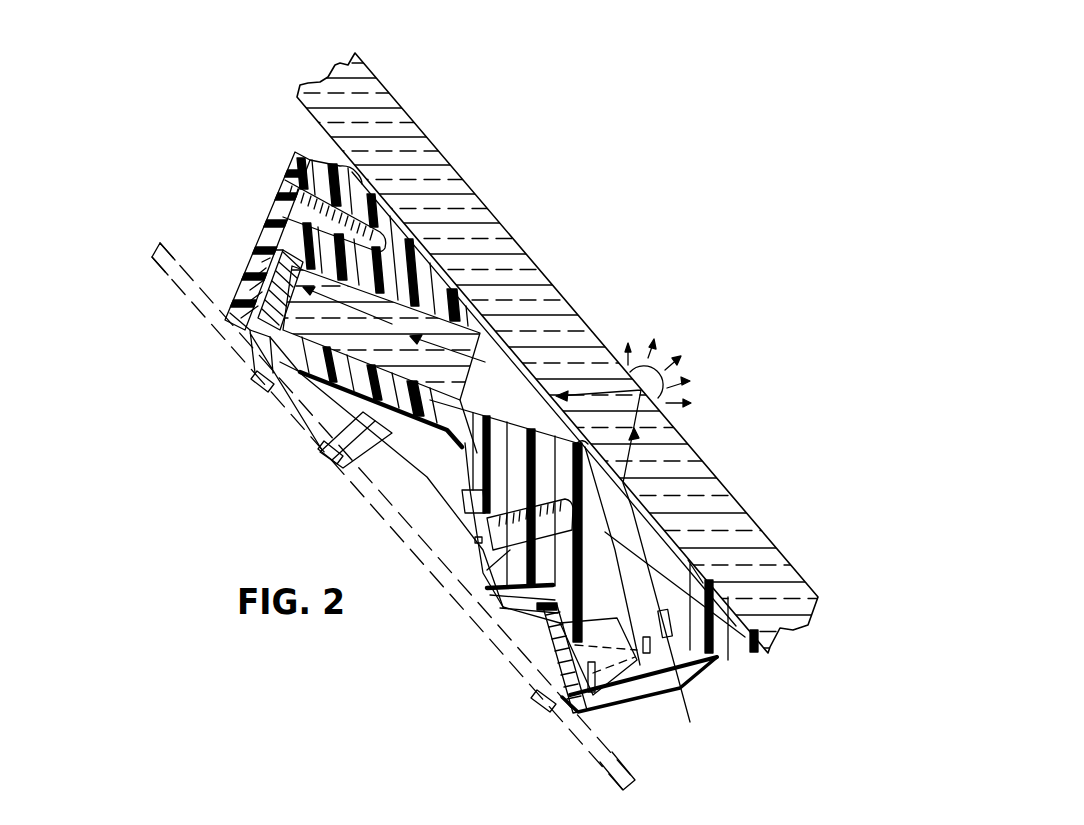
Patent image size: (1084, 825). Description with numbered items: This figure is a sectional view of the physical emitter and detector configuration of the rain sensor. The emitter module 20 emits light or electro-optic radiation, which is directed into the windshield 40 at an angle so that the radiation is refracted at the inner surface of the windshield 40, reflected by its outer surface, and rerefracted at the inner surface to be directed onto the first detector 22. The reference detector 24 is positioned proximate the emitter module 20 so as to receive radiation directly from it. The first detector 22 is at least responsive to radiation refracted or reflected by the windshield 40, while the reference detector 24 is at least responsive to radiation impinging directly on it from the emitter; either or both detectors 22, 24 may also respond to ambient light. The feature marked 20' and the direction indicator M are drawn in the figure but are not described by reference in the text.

The windshield 40 is at (582, 337).
The first detector 22 is at (268, 331).
The emitter module 20 is at (512, 480).
The module marker 20' is at (747, 585).
The reference detector 24 is at (568, 650).
The light source direction M is at (660, 372).